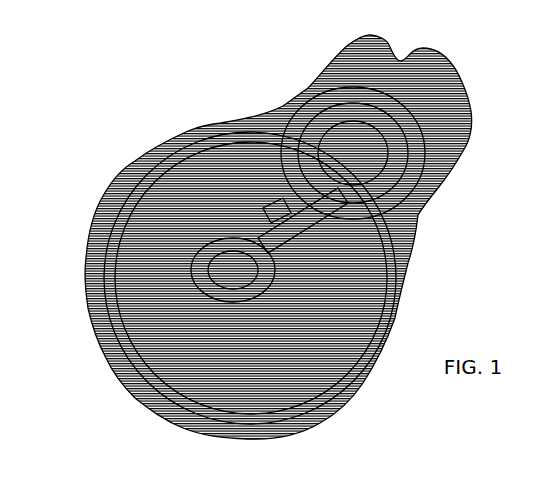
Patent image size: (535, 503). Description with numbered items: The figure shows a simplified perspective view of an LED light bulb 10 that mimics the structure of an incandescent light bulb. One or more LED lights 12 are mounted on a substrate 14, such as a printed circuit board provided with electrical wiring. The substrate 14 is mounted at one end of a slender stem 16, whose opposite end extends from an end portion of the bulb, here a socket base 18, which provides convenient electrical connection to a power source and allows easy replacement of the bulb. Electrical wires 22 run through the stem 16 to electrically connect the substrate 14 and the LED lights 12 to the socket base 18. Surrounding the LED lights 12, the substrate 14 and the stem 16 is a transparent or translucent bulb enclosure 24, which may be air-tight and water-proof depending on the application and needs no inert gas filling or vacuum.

The LED light bulb 10 is at (256, 260).
The LED lights 12 is at (200, 280).
The substrate 14 is at (360, 390).
The slender stem 16 is at (260, 205).
The socket base 18 is at (310, 77).
The electrical wires 22 is at (300, 220).
The bulb enclosure 24 is at (133, 390).